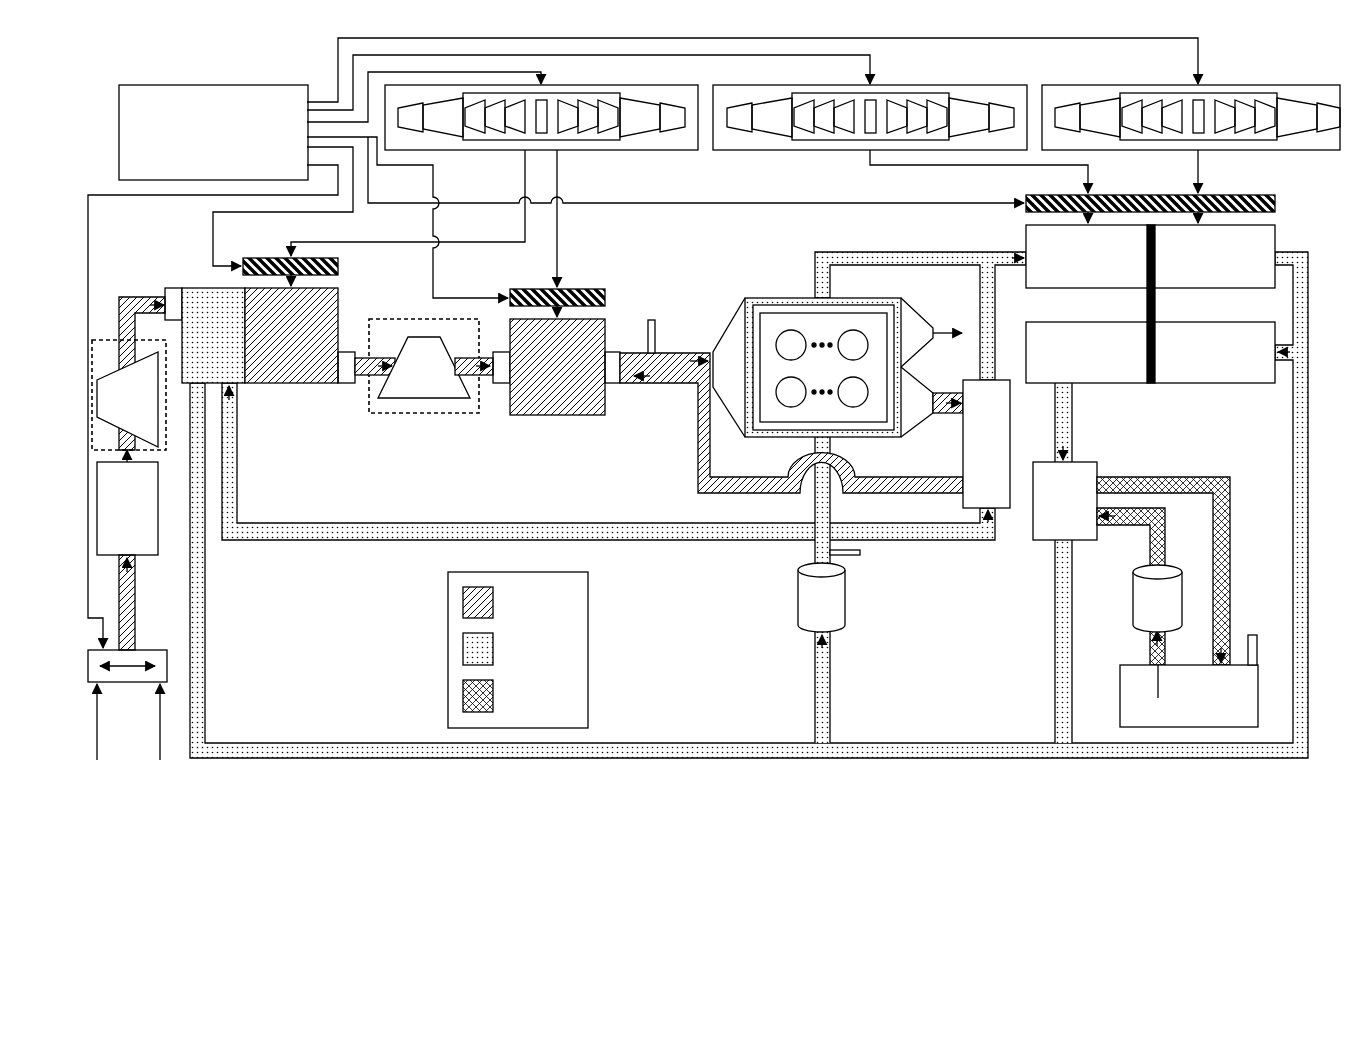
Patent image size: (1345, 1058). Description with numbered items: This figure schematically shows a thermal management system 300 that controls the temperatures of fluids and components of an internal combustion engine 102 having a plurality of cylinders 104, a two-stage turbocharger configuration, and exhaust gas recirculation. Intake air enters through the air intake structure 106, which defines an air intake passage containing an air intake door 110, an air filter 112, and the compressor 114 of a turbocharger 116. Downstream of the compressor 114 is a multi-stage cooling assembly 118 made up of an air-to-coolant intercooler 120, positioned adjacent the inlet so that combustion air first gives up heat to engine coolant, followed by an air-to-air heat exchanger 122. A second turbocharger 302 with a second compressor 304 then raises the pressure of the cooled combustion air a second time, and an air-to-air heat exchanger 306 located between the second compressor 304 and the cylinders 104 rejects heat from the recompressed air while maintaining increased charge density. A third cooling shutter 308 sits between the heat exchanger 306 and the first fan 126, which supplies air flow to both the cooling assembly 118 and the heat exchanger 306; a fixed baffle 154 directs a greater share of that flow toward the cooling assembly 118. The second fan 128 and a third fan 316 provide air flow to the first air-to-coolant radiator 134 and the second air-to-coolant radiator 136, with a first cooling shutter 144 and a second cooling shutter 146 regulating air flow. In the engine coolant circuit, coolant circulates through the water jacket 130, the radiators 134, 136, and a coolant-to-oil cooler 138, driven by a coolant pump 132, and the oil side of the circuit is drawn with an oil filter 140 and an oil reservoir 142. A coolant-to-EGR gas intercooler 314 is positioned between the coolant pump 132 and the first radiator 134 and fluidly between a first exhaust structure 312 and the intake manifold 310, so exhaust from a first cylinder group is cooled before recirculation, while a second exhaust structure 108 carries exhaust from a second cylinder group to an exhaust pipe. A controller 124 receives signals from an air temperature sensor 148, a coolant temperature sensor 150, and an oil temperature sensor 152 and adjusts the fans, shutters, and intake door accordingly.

The thermal management system 300 is at (1268, 75).
The controller 124 is at (288, 147).
The first fan 126 is at (628, 86).
The second fan 128 is at (957, 85).
The third fan 316 is at (1091, 85).
The second cooling shutter 146 is at (1262, 195).
The first air-to-coolant radiator 134 is at (1150, 256).
The second air-to-coolant radiator 136 is at (1150, 352).
The fixed baffle 154 is at (1157, 300).
The coolant-to-oil cooler 138 is at (1065, 501).
The oil filter 140 is at (1157, 598).
The oil reservoir 142 is at (1177, 602).
The oil temperature sensor 152 is at (1252, 635).
The coolant pump 132 is at (821, 597).
The coolant temperature sensor 150 is at (860, 552).
The coolant-to-EGR gas intercooler 314 is at (986, 444).
The first exhaust structure 312 is at (932, 426).
The water jacket 130 is at (848, 440).
The second exhaust structure 108 is at (943, 321).
The plurality of cylinders 104 is at (790, 384).
The internal combustion engine 102 is at (844, 329).
The air temperature sensor 148 is at (653, 320).
The intake manifold 310 is at (791, 388).
The third cooling shutter 308 is at (585, 288).
The air-to-air heat exchanger 306 is at (537, 367).
The second compressor 304 is at (424, 367).
The second turbocharger 302 is at (417, 380).
The first cooling shutter 144 is at (260, 258).
The air intake structure 106 is at (188, 511).
The turbocharger 116 is at (108, 330).
The compressor 114 is at (129, 395).
The air filter 112 is at (127, 502).
The air intake door 110 is at (140, 650).
The multi-stage cooling assembly 118 is at (260, 366).
The air-to-coolant intercooler 120 is at (213, 335).
The air-to-air heat exchanger 122 is at (291, 335).